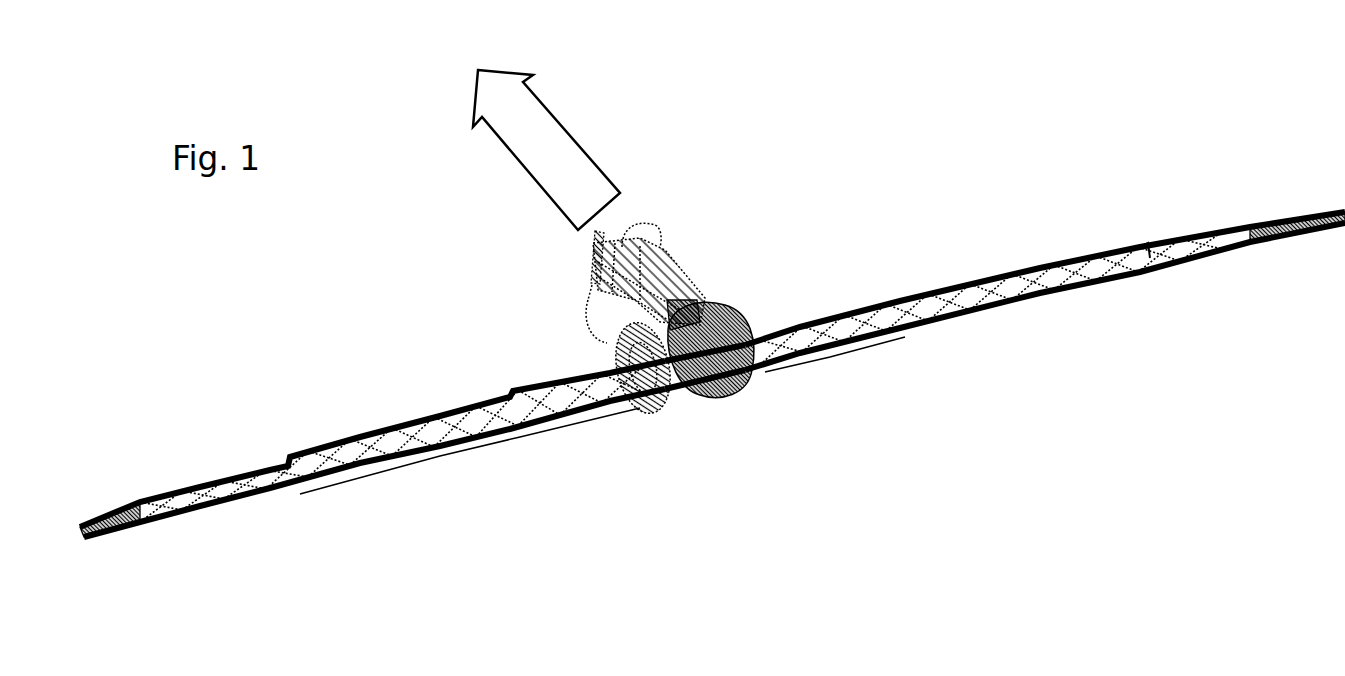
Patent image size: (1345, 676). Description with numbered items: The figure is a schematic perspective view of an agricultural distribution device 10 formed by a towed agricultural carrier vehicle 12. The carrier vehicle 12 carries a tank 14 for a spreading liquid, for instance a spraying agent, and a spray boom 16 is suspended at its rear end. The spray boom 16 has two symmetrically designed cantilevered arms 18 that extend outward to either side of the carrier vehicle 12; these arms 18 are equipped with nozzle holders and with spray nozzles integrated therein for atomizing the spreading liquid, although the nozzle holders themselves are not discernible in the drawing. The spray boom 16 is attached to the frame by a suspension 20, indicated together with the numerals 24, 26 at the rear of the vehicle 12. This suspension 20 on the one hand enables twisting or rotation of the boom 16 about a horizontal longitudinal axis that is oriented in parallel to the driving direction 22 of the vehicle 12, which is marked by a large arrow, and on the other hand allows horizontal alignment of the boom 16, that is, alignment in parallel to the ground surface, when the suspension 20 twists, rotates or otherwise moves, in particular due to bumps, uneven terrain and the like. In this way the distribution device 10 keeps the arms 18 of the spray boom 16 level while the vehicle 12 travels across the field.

The agricultural distribution device 10 is at (895, 108).
The agricultural carrier vehicle 12 is at (683, 255).
The tank 14 is at (603, 305).
The spray boom 16 is at (578, 442).
The cantilevered arms 18 is at (372, 458).
The suspension 20 is at (781, 307).
The driving direction 22 is at (546, 150).
The controller 24 is at (781, 307).
The actuator 26 is at (740, 325).